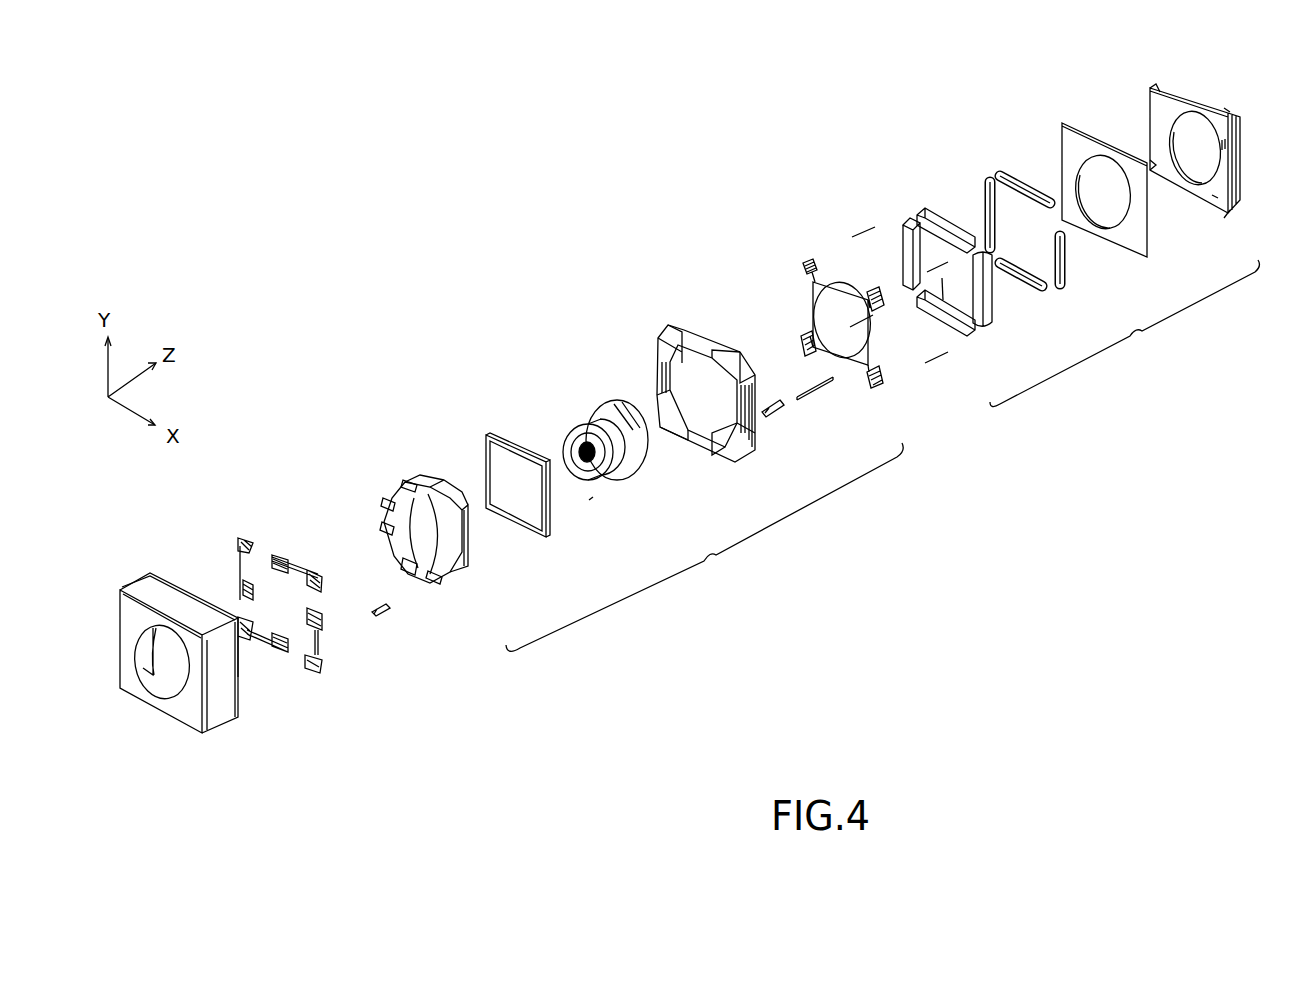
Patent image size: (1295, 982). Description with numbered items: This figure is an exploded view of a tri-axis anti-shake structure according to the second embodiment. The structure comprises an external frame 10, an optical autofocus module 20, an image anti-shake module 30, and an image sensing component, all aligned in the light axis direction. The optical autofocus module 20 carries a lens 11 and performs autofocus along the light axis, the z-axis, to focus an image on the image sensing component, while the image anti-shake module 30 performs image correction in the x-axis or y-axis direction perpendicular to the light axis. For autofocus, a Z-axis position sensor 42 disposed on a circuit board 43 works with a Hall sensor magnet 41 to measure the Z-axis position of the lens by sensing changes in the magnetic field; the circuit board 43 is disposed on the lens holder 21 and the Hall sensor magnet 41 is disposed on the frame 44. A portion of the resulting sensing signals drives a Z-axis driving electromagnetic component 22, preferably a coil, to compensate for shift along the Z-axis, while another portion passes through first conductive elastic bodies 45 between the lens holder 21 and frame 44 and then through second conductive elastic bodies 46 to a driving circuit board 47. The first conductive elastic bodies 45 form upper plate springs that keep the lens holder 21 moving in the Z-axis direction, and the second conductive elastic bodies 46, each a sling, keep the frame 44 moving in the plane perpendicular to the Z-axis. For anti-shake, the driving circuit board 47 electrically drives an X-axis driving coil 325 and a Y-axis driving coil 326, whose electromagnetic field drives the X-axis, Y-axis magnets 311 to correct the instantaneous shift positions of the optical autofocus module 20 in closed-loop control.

The external frame 10 is at (227, 757).
The lens 11 is at (583, 400).
The optical autofocus module 20 is at (704, 547).
The lens holder 21 is at (403, 470).
The Z-axis driving electromagnetic component 22 is at (487, 428).
The image anti-shake module 30 is at (1124, 245).
The Hall sensor magnet 41 is at (385, 622).
The Z-axis position sensor 42 is at (777, 417).
The circuit board 43 is at (828, 393).
The frame 44 is at (664, 320).
The first conductive elastic bodies 45 is at (377, 703).
The second conductive elastic bodies 46 is at (857, 228).
The driving circuit board 47 is at (1097, 132).
The X-axis, Y-axis magnets 311 is at (943, 207).
The X-axis driving coil 325 is at (1073, 265).
The Y-axis driving coil 326 is at (1018, 167).